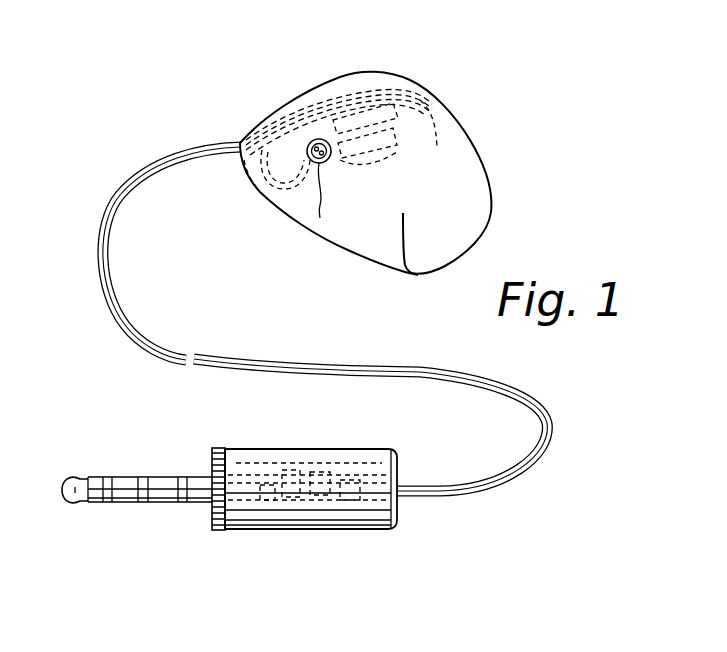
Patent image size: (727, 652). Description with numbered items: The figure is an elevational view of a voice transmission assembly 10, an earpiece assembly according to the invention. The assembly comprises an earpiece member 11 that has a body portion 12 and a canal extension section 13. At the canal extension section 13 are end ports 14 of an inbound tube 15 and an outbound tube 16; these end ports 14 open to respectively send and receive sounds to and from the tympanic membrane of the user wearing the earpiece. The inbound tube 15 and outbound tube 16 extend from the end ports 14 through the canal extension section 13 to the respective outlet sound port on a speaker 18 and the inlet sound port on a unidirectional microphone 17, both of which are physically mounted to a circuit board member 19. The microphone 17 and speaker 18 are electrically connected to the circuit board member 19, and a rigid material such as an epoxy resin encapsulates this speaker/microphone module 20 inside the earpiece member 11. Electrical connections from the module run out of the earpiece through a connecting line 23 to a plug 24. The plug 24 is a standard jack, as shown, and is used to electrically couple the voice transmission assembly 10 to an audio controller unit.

The voice transmission assembly 10 is at (384, 155).
The earpiece member 11 is at (290, 98).
The body portion 12 is at (467, 198).
The canal extension section 13 is at (308, 200).
The end ports 14 is at (308, 143).
The inbound tube 15 is at (243, 178).
The outbound tube 16 is at (270, 180).
The unidirectional microphone 17 is at (387, 150).
The speaker 18 is at (393, 72).
The circuit board member 19 is at (432, 90).
The speaker/microphone module 20 is at (426, 147).
The connecting line 23 is at (115, 300).
The plug 24 is at (318, 535).